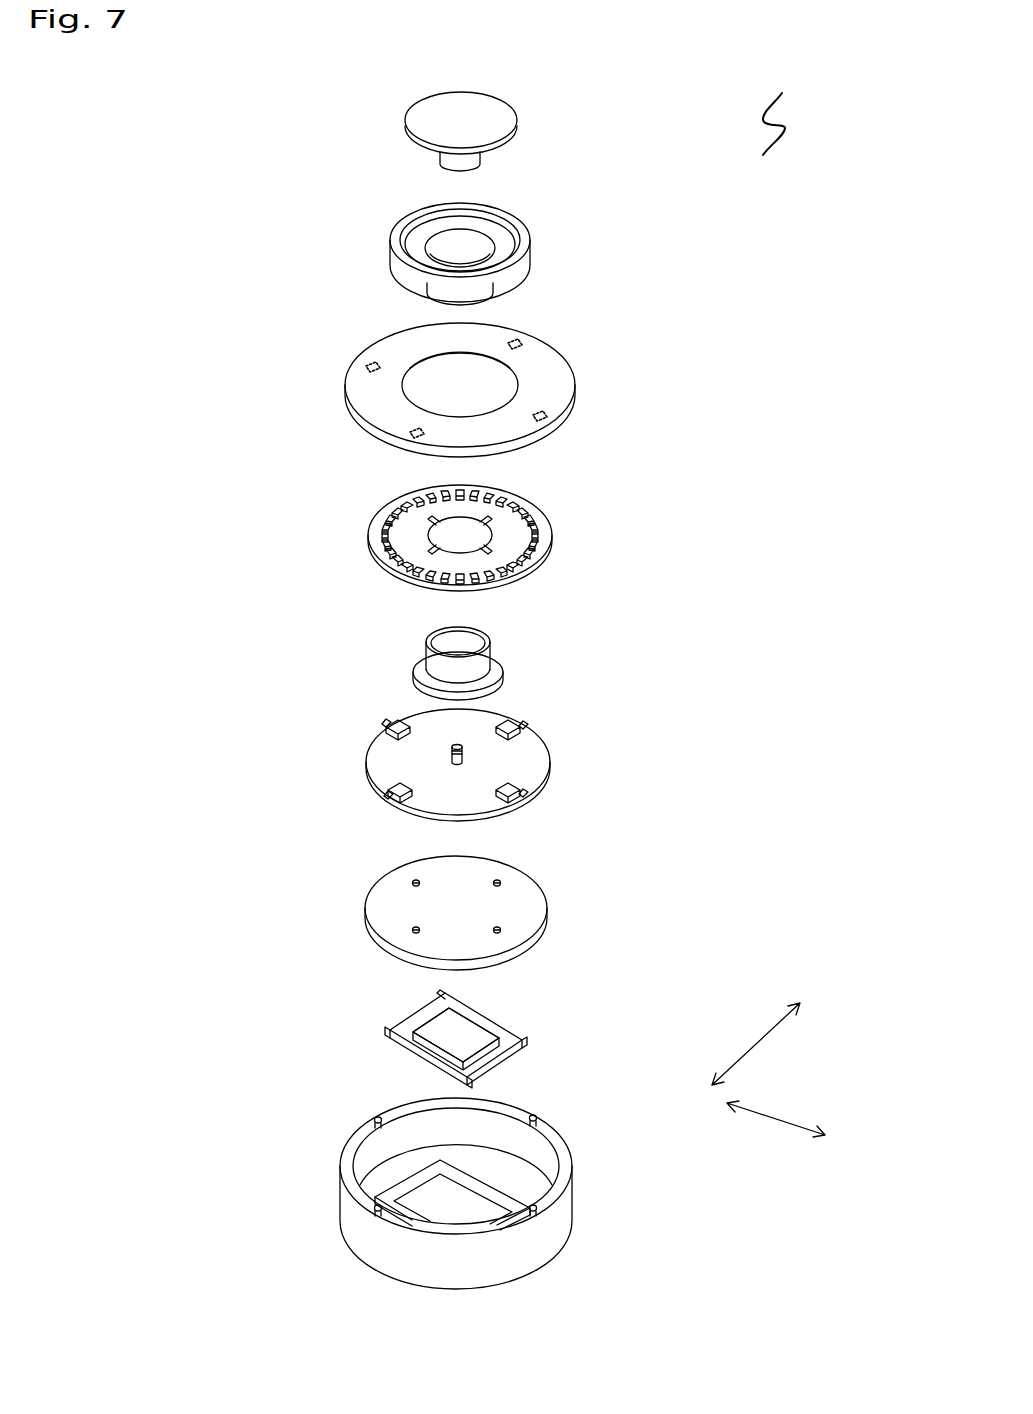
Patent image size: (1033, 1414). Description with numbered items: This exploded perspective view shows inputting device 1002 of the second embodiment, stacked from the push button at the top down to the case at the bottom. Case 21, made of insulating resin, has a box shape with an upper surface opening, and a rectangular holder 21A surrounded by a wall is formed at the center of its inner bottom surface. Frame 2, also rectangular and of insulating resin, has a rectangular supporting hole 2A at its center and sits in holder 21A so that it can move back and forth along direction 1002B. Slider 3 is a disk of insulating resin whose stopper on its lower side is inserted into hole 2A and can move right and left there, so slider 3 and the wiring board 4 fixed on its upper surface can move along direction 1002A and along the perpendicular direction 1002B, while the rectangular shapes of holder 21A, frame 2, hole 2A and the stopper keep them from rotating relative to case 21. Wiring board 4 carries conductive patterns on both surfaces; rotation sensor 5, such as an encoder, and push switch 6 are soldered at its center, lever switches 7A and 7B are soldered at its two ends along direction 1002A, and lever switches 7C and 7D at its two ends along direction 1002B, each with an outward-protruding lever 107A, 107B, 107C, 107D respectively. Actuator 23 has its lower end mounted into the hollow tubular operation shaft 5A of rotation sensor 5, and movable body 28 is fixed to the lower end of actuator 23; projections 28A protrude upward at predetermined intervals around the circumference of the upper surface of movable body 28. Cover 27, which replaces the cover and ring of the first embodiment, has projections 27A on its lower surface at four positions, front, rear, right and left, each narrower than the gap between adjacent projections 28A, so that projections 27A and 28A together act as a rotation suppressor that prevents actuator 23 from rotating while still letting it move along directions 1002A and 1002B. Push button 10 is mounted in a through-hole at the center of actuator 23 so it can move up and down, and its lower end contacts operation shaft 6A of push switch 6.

The push button 10 is at (517, 122).
The actuator 23 is at (530, 248).
The cover 27 is at (574, 378).
The projections 27A is at (539, 421).
The movable body 28 is at (553, 533).
The projections 28A is at (370, 533).
The rotation sensor 5 is at (503, 660).
The operation shaft 5A is at (445, 637).
The wiring board 4 is at (540, 794).
The push switch 6 is at (466, 757).
The operation shaft 6A is at (463, 746).
The lever switch 7A is at (504, 722).
The lever switch 7B is at (390, 789).
The lever switch 7C is at (502, 797).
The lever switch 7D is at (382, 733).
The lever 107A is at (524, 723).
The lever 107B is at (388, 797).
The lever 107C is at (524, 798).
The lever 107D is at (386, 721).
The slider 3 is at (548, 905).
The frame 2 is at (512, 1040).
The supporting hole 2A is at (450, 1035).
The case 21 is at (574, 1207).
The holder 21A is at (440, 1200).
The inputting device 1002 is at (791, 107).
The direction 1002A is at (750, 1048).
The direction 1002B is at (780, 1118).